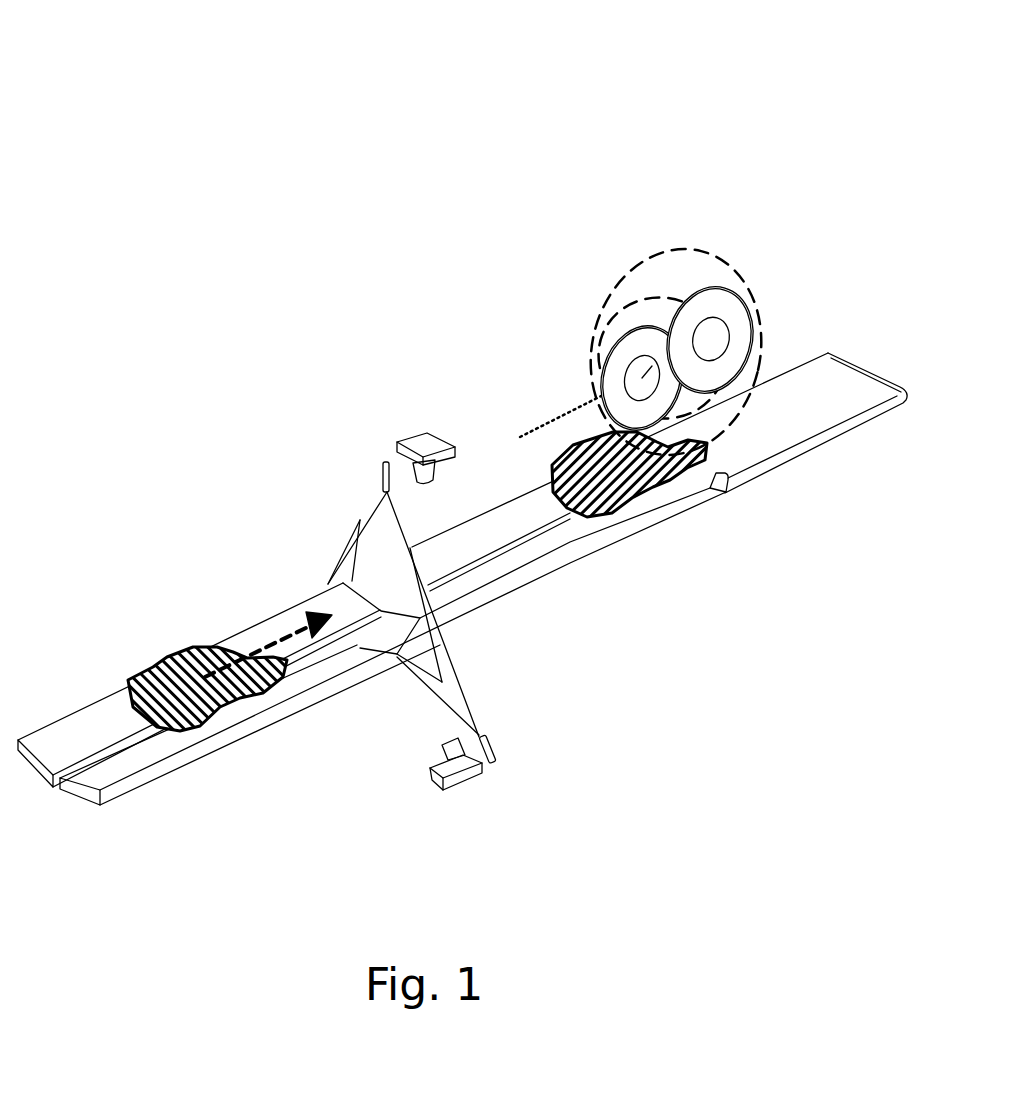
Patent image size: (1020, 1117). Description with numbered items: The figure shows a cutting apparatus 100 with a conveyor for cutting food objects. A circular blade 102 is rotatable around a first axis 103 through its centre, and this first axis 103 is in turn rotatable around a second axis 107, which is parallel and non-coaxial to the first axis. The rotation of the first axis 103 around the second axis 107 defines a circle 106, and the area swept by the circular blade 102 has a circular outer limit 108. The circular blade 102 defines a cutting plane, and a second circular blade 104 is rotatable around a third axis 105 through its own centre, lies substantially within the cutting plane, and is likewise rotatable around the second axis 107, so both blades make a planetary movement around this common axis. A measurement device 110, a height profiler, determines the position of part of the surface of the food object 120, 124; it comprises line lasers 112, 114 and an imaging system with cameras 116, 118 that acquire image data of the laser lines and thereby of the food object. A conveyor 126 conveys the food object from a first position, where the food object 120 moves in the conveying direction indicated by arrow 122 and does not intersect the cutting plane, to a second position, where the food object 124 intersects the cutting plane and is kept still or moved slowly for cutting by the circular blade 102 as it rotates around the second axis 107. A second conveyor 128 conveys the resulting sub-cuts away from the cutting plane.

The cutting apparatus 100 is at (158, 88).
The circular blade 102 is at (618, 343).
The first axis 103 is at (567, 410).
The second circular blade 104 is at (699, 300).
The third axis 105 is at (708, 343).
The circle 106 is at (713, 400).
The second axis 107 is at (660, 368).
The circular outer limit 108 is at (625, 250).
The measurement device 110 is at (330, 450).
The line laser 112 is at (383, 463).
The line laser 114 is at (500, 758).
The camera 116 is at (428, 440).
The camera 118 is at (458, 765).
The food object 120 is at (165, 660).
The arrow 122 is at (278, 630).
The food object 124 is at (640, 498).
The conveyor 126 is at (537, 550).
The second conveyor 128 is at (825, 385).